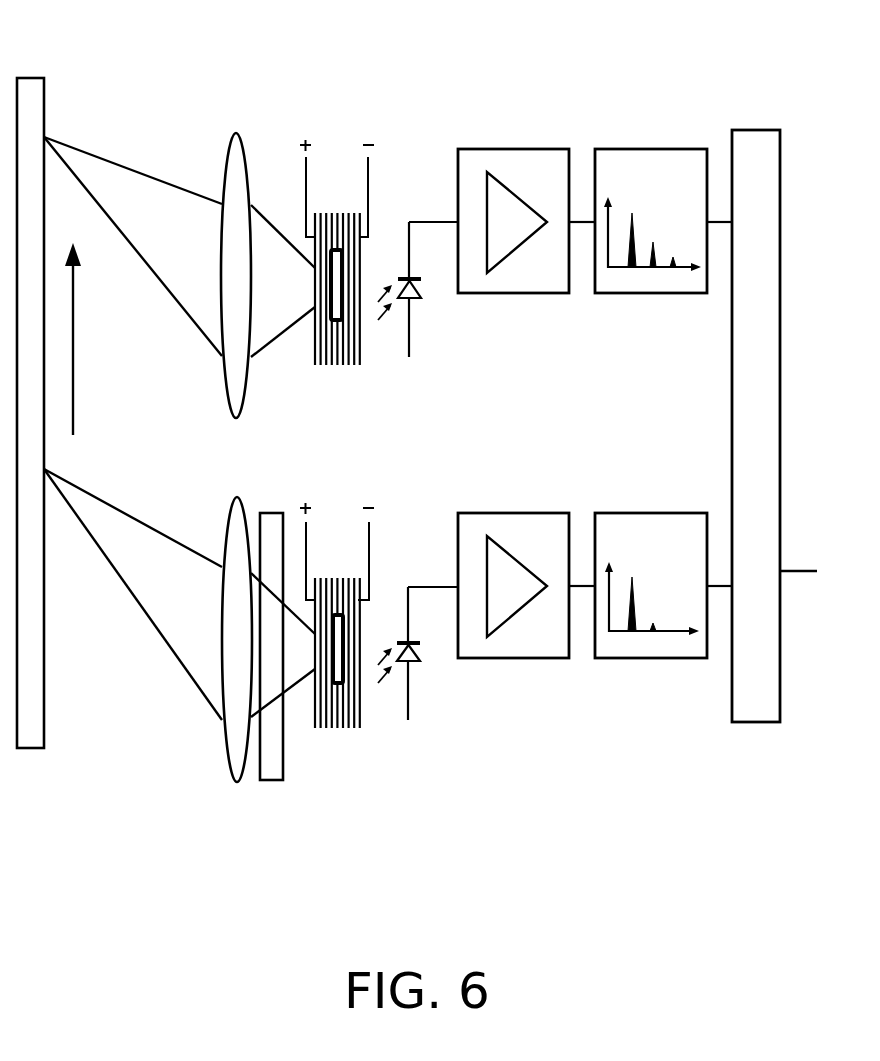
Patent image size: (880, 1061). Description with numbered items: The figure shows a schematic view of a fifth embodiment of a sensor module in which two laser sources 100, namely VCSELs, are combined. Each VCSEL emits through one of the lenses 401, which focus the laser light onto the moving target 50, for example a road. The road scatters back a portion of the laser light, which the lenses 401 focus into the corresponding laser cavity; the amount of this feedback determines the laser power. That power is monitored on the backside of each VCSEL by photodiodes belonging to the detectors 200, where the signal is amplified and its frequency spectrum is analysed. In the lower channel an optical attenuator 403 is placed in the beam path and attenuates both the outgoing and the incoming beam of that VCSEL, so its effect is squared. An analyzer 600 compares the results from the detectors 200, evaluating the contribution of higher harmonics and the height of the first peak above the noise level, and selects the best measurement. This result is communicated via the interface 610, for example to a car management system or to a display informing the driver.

The moving target 50 is at (33, 77).
The lenses 401 is at (235, 133).
The optical attenuator 403 is at (272, 782).
The laser sources 100 is at (339, 182).
The detectors 200 is at (705, 138).
The analyzer 600 is at (755, 723).
The interface 610 is at (798, 573).